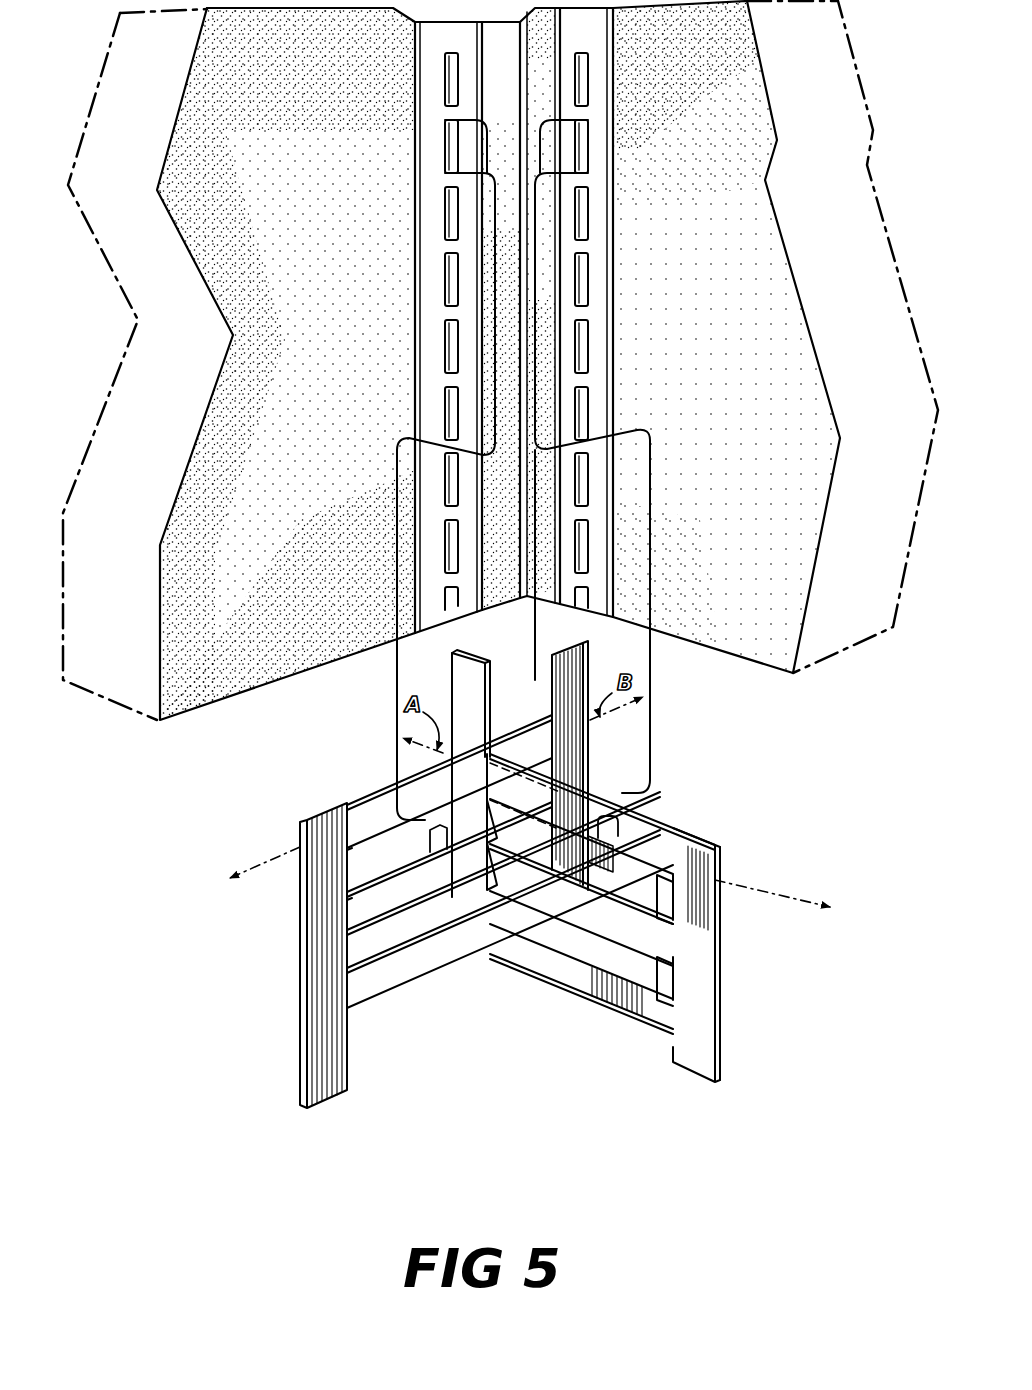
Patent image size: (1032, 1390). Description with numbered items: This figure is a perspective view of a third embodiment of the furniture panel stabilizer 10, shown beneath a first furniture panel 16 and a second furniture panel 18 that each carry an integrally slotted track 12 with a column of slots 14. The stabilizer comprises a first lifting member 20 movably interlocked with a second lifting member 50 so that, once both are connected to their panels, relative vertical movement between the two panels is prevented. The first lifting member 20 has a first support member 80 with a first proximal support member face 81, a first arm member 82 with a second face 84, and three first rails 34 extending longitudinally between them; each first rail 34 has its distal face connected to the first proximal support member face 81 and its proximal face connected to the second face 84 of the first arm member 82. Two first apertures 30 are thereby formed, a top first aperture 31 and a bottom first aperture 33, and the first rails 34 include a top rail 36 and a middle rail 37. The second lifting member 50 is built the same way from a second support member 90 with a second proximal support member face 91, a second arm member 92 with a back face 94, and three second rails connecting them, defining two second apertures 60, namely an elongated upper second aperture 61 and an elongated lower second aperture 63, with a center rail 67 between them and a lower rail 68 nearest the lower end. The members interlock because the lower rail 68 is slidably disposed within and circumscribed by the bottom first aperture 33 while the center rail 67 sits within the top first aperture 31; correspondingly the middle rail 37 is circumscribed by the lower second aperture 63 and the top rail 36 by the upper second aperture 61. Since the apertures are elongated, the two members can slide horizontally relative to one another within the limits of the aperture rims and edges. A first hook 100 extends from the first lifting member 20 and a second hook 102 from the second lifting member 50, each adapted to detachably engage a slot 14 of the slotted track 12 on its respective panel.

The furniture panel stabilizer 10 is at (713, 1084).
The integrally slotted track 12 is at (418, 252).
The slot 14 is at (446, 147).
The first furniture panel 16 is at (138, 378).
The second furniture panel 18 is at (845, 250).
The first lifting member 20 is at (718, 894).
The first aperture 30 is at (652, 970).
The top first aperture 31 is at (648, 872).
The bottom first aperture 33 is at (658, 980).
The first rail 34 is at (670, 847).
The top rail 36 is at (637, 830).
The middle rail 37 is at (630, 928).
The second lifting member 50 is at (303, 1090).
The second aperture 60 is at (362, 867).
The upper second aperture 61 is at (370, 855).
The lower second aperture 63 is at (400, 978).
The center rail 67 is at (362, 910).
The lower rail 68 is at (365, 995).
The first support member 80 is at (700, 858).
The first proximal support member face 81 is at (660, 1000).
The first arm member 82 is at (462, 684).
The second face 84 is at (500, 900).
The second support member 90 is at (316, 1034).
The second proximal support member face 91 is at (362, 996).
The second arm member 92 is at (575, 672).
The back face 94 is at (548, 776).
The first hook 100 is at (440, 824).
The second hook 102 is at (612, 828).